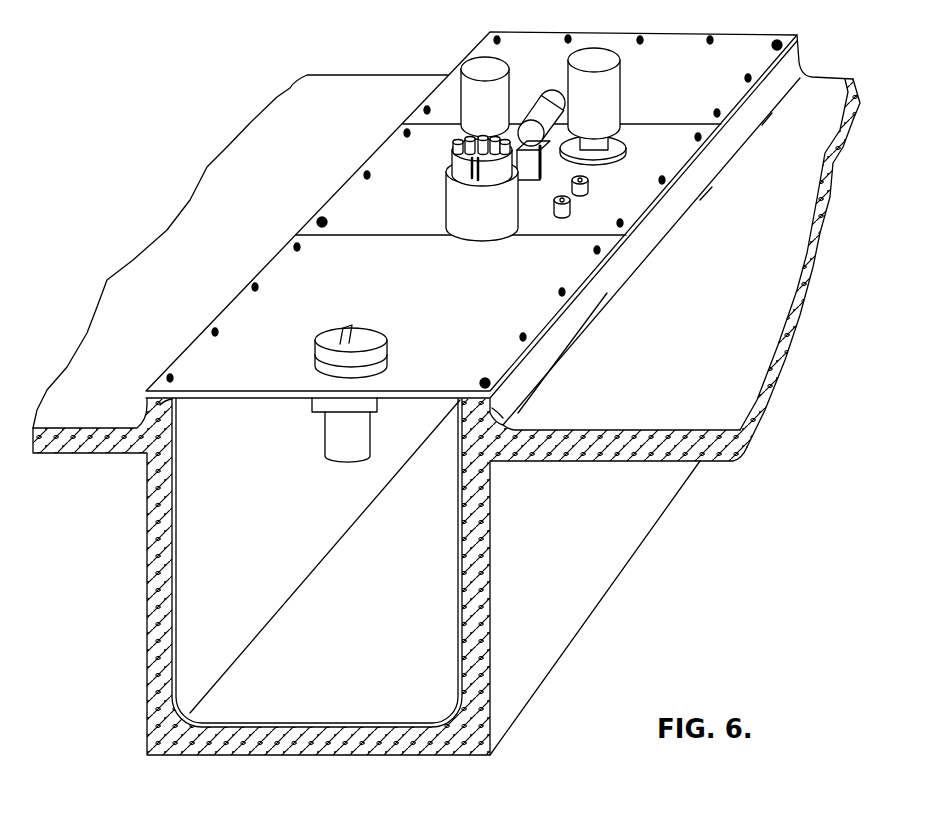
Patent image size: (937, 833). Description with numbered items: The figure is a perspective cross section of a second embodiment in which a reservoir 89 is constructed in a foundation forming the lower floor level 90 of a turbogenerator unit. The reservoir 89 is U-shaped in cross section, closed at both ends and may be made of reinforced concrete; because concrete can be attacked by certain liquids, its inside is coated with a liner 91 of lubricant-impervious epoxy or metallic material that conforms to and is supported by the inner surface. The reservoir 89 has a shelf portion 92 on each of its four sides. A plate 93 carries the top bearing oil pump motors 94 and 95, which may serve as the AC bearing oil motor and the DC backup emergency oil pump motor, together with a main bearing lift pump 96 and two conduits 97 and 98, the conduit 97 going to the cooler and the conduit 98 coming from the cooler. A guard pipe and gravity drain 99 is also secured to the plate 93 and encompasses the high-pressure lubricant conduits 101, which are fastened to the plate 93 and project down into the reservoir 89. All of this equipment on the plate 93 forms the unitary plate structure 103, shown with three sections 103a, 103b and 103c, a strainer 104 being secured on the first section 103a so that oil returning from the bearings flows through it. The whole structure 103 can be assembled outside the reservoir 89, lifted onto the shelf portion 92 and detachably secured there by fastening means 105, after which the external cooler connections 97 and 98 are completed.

The reservoir 89 is at (595, 608).
The lower floor level 90 is at (645, 440).
The liner 91 is at (463, 613).
The shelf portion 92 is at (160, 405).
The plate 93 is at (688, 142).
The top bearing oil pump motor 94 is at (500, 90).
The top bearing oil pump motor 95 is at (608, 87).
The main bearing lift pump 96 is at (545, 106).
The conduit 97 is at (588, 183).
The conduit 98 is at (575, 208).
The guard pipe and gravity drain 99 is at (458, 198).
The high-pressure lubricant conduits 101 is at (468, 163).
The unitary plate structure 103 is at (650, 193).
The first section 103a is at (578, 273).
The second section 103b is at (672, 165).
The third section 103c is at (735, 93).
The strainer 104 is at (372, 337).
The fastening means 105 is at (774, 47).